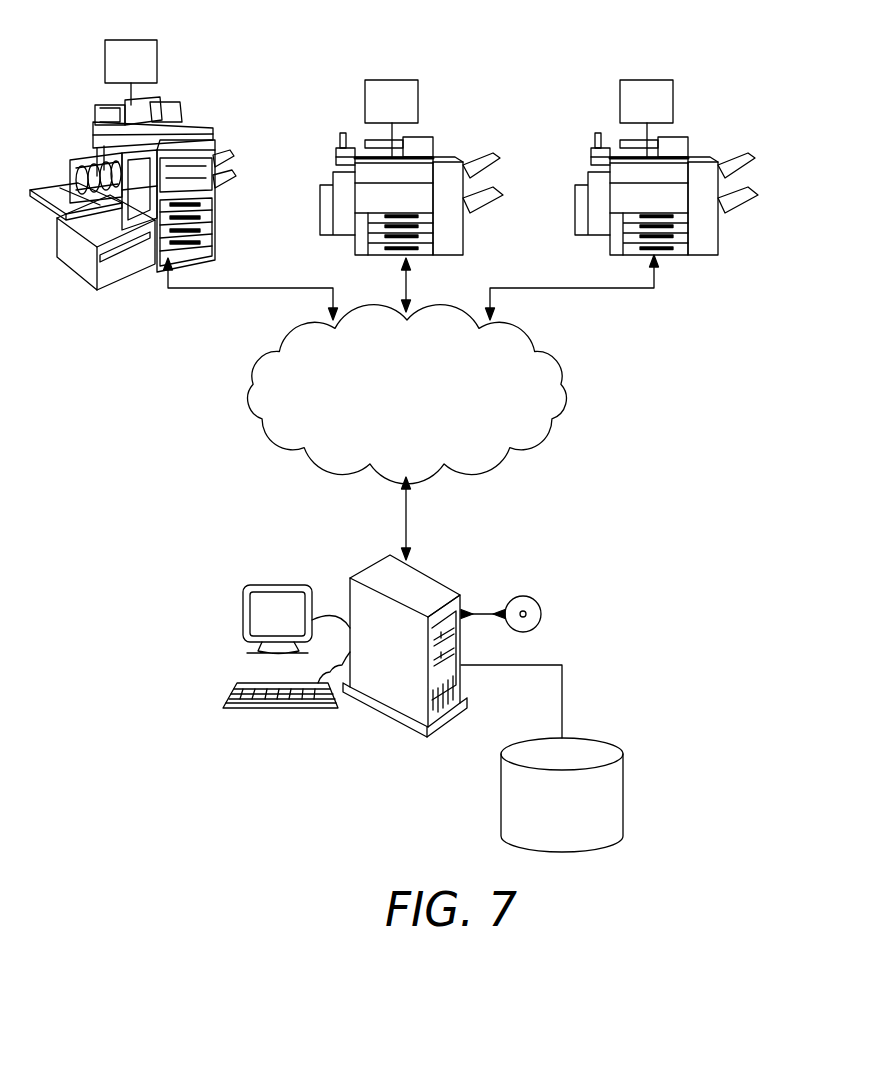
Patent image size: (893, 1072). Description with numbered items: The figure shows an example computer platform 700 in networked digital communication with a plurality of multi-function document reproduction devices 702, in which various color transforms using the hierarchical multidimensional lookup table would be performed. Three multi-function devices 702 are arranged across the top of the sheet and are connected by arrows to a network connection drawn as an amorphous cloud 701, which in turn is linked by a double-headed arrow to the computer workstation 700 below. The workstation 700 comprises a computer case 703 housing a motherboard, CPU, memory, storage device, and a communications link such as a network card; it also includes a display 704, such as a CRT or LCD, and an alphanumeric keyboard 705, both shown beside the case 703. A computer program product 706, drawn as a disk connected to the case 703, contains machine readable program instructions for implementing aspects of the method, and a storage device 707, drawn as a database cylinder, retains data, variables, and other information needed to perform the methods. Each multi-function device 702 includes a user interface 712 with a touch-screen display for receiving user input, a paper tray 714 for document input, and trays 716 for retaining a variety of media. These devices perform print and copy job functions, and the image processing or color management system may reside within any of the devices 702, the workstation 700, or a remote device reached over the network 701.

The computer platform 700 is at (547, 561).
The network 701 is at (543, 357).
The multi-function document reproduction device 702 is at (181, 86).
The computer case 703 is at (420, 580).
The display 704 is at (280, 585).
The alphanumeric keyboard 705 is at (252, 710).
The computer program product 706 is at (541, 606).
The storage device 707 is at (597, 743).
The user interface 712 is at (142, 38).
The paper tray 714 is at (213, 172).
The trays 716 is at (196, 241).